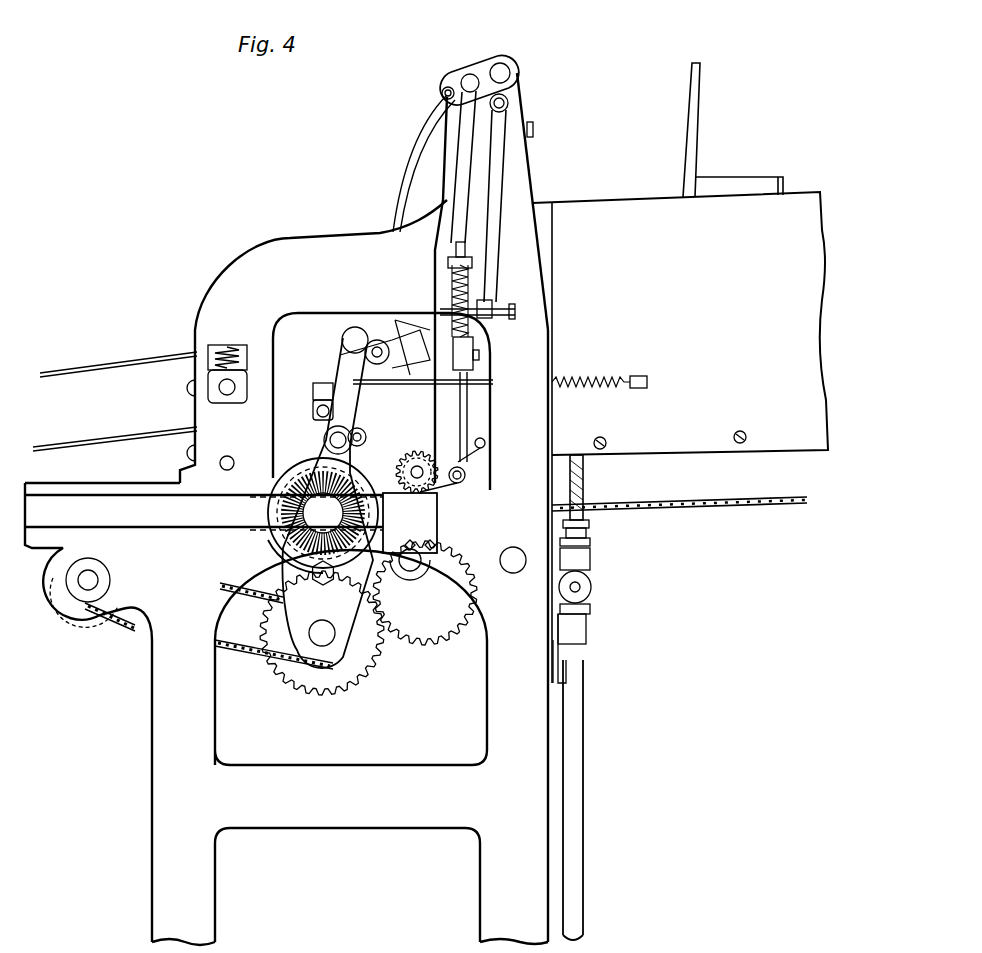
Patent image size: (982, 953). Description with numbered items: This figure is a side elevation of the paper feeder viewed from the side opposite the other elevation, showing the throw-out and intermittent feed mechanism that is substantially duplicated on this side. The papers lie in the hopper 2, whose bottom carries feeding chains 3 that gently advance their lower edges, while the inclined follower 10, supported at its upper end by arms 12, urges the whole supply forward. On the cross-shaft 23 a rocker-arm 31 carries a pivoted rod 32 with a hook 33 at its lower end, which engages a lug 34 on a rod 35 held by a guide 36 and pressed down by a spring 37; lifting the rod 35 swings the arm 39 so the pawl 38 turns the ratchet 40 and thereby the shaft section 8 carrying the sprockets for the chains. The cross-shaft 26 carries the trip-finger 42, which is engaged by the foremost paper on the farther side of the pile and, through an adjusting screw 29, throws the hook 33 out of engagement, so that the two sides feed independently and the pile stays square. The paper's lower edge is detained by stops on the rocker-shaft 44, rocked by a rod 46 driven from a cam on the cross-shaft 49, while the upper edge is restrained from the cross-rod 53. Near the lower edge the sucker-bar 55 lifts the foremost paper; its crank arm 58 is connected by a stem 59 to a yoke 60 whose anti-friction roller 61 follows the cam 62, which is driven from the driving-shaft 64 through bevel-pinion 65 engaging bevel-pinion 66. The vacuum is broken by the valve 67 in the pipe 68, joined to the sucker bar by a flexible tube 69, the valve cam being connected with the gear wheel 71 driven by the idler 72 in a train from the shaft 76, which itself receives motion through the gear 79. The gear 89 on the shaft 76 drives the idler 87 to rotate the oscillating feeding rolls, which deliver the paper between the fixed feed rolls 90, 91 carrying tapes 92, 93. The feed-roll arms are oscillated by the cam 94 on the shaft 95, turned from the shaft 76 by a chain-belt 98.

The hopper 2 is at (680, 323).
The feeding chains 3 is at (710, 494).
The shaft section 8 is at (462, 481).
The follower 10 is at (686, 143).
The arms 12 is at (748, 183).
The cross-shaft 23 is at (500, 73).
The cross-shaft 26 is at (505, 100).
The adjusting screw 29 is at (516, 296).
The rocker-arm 31 is at (477, 75).
The pivoted rod 32 is at (458, 158).
The hook 33 is at (493, 382).
The lug 34 is at (473, 345).
The rod 35 is at (467, 415).
The guide 36 is at (470, 262).
The spring 37 is at (470, 290).
The pawl 38 is at (485, 443).
The arm 39 is at (440, 488).
The ratchet 40 is at (420, 466).
The trip-finger 42 is at (415, 155).
The rocker-shaft 44 is at (362, 434).
The rod 46 is at (410, 523).
The cross-shaft 49 is at (513, 573).
The cross-rod 53 is at (533, 128).
The sucker-bar 55 is at (338, 356).
The crank arm 58 is at (360, 330).
The stem 59 is at (366, 348).
The yoke 60 is at (305, 463).
The anti-friction roller 61 is at (345, 432).
The cam 62 is at (268, 545).
The driving-shaft 64 is at (165, 528).
The bevel-pinion 65 is at (360, 565).
The bevel-pinion 66 is at (285, 500).
The valve 67 is at (600, 572).
The pipe 68 is at (600, 622).
The flexible tube 69 is at (583, 478).
The gear wheel 71 is at (586, 533).
The idler 72 is at (418, 588).
The shaft 76 is at (322, 640).
The gear 79 is at (350, 637).
The idler 87 is at (316, 385).
The gear 89 is at (365, 660).
The fixed feed roll 90 is at (195, 388).
The fixed feed roll 91 is at (195, 453).
The tape 92 is at (120, 348).
The tape 93 is at (125, 440).
The cam 94 is at (95, 610).
The shaft 95 is at (90, 570).
The chain-belt 98 is at (118, 620).